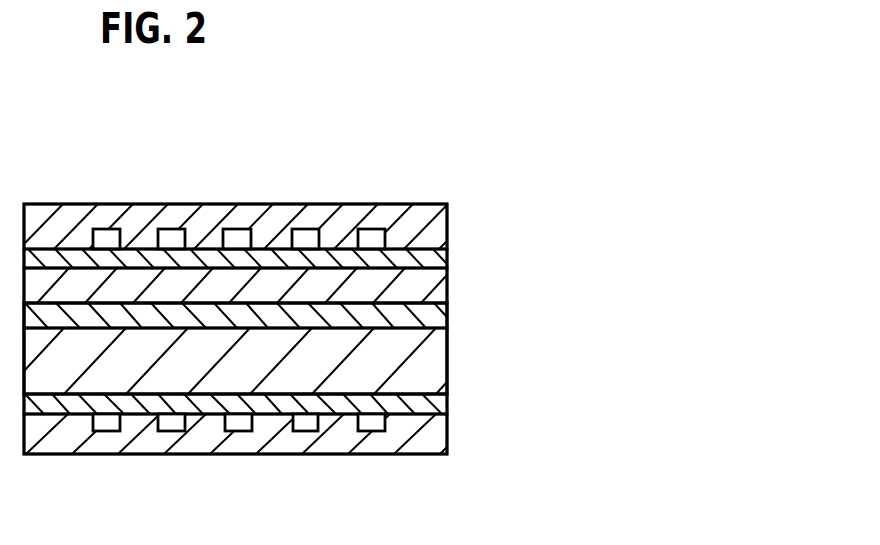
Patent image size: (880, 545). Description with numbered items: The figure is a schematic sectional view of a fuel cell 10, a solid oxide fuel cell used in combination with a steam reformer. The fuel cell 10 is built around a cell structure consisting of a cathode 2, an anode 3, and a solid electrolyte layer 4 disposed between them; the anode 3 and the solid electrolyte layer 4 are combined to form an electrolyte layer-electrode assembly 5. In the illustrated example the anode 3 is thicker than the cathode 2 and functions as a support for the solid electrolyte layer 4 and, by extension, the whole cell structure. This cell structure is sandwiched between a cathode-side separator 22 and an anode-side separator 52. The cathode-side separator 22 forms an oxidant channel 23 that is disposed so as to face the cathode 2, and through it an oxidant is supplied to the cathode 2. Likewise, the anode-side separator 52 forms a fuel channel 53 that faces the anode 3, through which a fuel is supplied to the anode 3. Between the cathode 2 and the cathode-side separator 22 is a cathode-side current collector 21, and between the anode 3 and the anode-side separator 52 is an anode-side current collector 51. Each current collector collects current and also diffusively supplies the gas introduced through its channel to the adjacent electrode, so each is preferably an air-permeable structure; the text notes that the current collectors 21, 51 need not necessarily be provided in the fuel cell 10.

The fuel cell 10 is at (451, 171).
The cathode-side separator 22 is at (433, 223).
The oxidant channel 23 is at (173, 237).
The cathode-side current collector 21 is at (310, 253).
The cathode 2 is at (428, 283).
The solid electrolyte layer 4 is at (428, 316).
The anode 3 is at (266, 362).
The electrolyte layer-electrode assembly 5 is at (290, 345).
The anode-side current collector 51 is at (82, 405).
The anode-side separator 52 is at (433, 437).
The fuel channel 53 is at (238, 422).